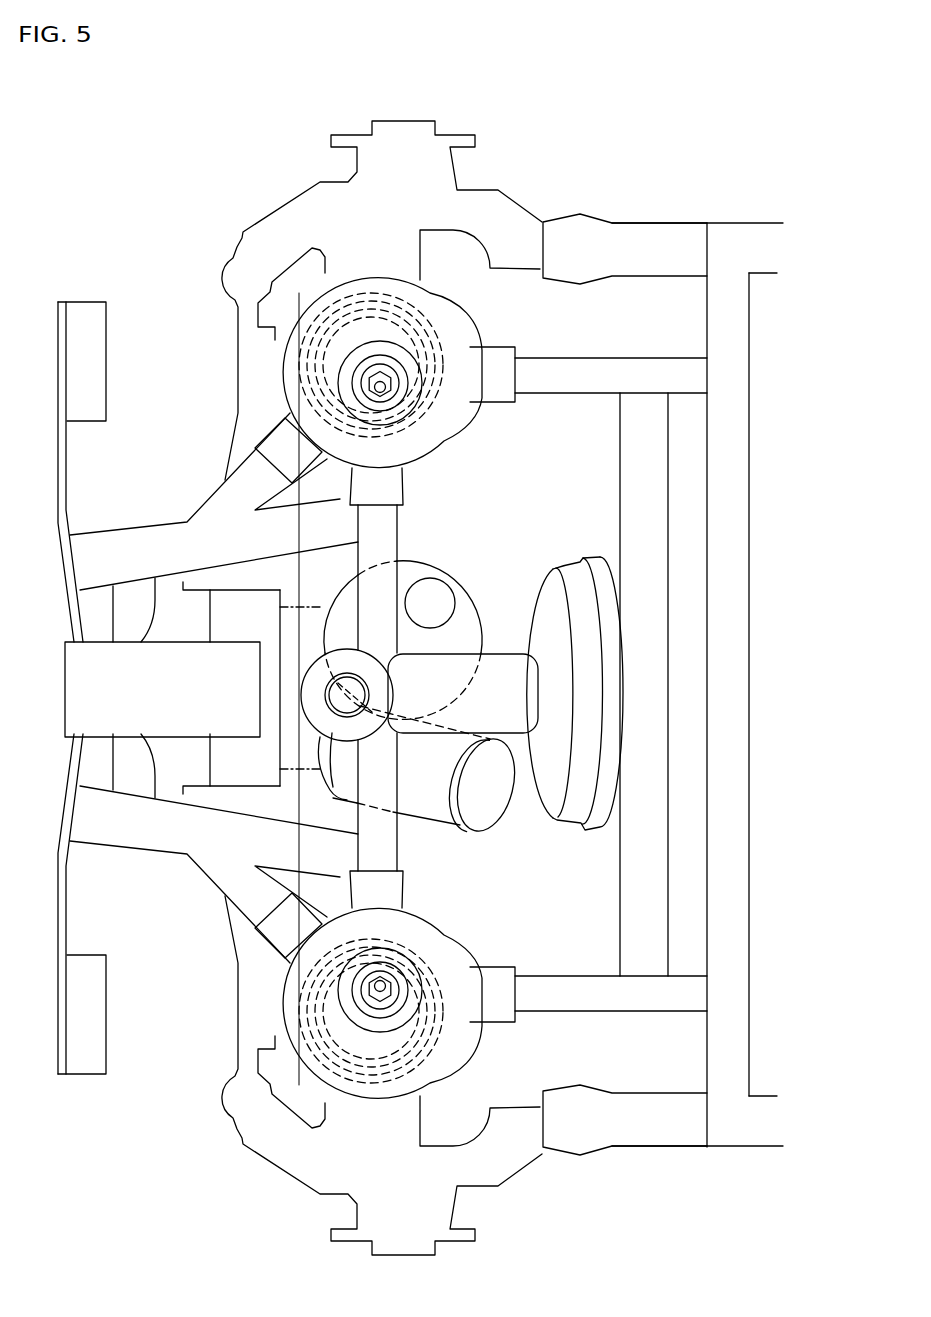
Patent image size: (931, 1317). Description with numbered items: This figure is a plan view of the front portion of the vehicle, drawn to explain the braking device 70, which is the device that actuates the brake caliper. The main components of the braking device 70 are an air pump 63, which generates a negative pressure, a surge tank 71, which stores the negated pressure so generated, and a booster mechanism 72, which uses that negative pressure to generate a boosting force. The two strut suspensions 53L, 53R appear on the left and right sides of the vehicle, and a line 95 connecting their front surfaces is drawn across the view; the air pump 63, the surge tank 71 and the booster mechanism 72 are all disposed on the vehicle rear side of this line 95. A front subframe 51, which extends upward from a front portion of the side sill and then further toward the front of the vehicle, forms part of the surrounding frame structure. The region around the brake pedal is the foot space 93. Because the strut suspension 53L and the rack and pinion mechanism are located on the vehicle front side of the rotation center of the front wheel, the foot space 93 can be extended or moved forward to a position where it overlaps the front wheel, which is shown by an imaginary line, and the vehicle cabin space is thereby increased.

The front subframe 51 is at (592, 993).
The strut suspension 53R is at (327, 307).
The strut suspension 53L is at (352, 1082).
The air pump 63 is at (436, 803).
The braking device 70 is at (565, 855).
The surge tank 71 is at (408, 577).
The booster mechanism 72 is at (573, 582).
The foot space 93 is at (613, 825).
The line 95 is at (300, 800).